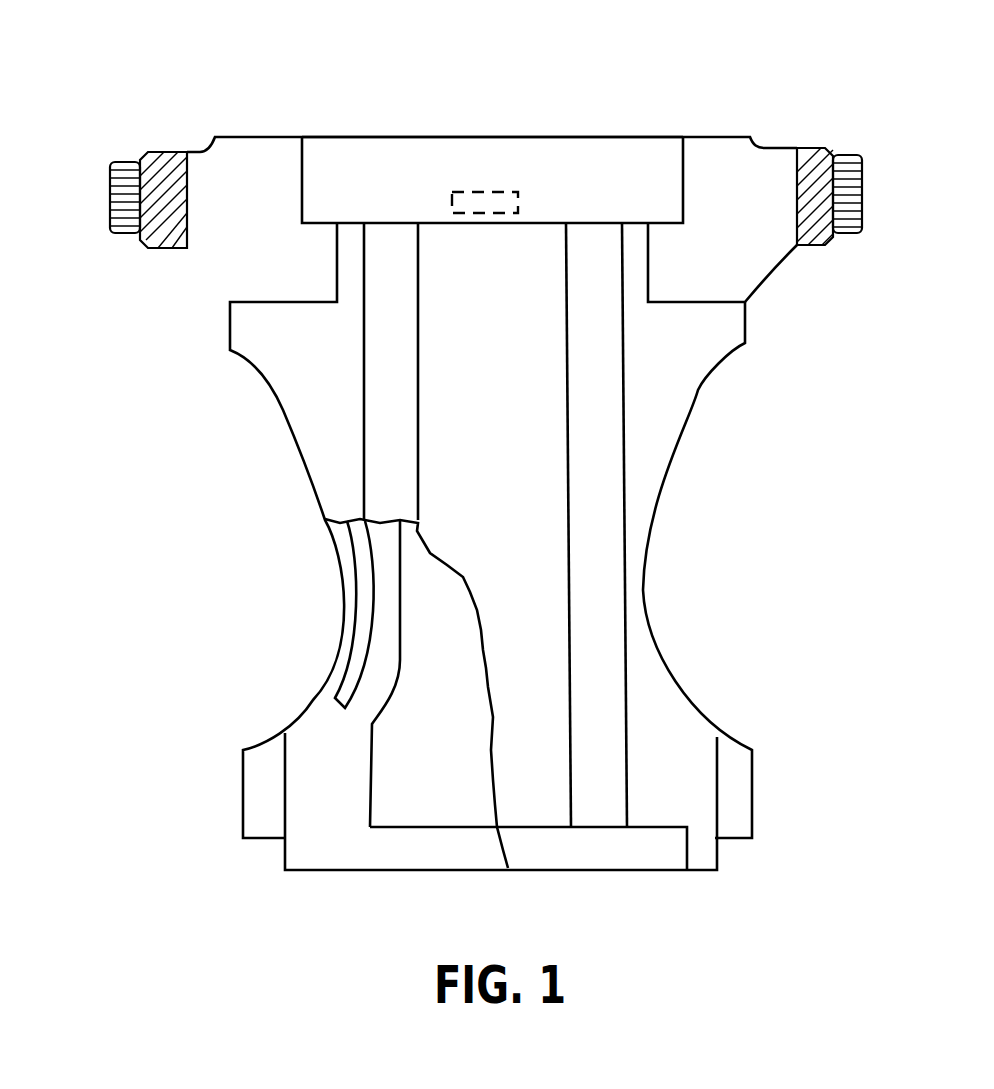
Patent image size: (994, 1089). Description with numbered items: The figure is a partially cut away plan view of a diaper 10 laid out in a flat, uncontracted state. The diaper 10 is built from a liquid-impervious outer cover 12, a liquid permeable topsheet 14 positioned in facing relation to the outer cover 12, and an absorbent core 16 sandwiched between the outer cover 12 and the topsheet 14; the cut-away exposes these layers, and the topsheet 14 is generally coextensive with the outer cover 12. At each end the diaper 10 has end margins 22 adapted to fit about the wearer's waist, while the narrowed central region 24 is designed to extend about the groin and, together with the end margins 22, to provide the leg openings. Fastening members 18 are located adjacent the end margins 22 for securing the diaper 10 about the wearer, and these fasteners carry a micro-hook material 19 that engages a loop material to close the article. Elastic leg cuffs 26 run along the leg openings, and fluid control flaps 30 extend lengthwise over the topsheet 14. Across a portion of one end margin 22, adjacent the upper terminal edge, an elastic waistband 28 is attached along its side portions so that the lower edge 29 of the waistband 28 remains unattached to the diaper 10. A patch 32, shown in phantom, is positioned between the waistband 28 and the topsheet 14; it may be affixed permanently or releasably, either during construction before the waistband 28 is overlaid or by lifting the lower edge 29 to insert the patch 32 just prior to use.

The diaper 10 is at (232, 94).
The liquid-impervious outer cover 12 is at (357, 857).
The liquid permeable topsheet 14 is at (486, 389).
The absorbent core 16 is at (434, 764).
The fastening members 18 is at (158, 165).
The micro-hook material 19 is at (110, 183).
The end margins 22 is at (780, 290).
The central region 24 is at (700, 560).
The elastic leg cuffs 26 is at (358, 626).
The elastic waistband 28 is at (373, 150).
The lower edge of the waistband 29 is at (555, 220).
The fluid control flaps 30 is at (382, 432).
The patch 32 is at (510, 190).